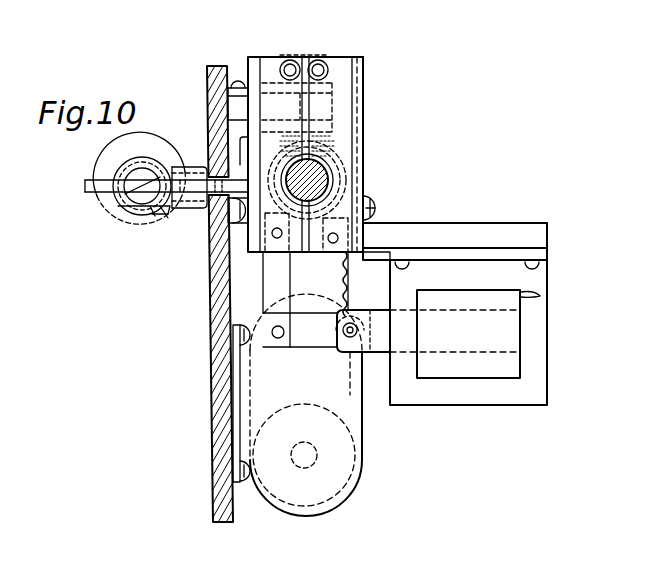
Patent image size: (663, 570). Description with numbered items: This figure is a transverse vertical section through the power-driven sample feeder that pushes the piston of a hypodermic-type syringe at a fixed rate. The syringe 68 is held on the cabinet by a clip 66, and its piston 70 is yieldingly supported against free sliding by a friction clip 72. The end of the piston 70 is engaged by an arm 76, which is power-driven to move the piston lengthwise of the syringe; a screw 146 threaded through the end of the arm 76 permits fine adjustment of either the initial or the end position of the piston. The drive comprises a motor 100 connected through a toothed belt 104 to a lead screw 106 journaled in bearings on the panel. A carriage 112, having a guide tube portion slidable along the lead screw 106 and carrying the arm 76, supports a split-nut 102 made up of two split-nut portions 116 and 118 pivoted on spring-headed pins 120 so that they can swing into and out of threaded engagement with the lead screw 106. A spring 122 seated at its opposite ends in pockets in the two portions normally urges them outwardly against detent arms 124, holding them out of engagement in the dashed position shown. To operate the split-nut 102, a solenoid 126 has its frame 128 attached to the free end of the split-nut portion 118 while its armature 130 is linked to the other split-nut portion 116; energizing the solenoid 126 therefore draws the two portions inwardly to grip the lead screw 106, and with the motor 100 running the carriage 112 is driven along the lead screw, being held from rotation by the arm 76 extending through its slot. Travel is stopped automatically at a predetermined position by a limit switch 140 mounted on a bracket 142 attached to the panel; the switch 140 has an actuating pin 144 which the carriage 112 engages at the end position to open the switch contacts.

The clip 66 is at (200, 208).
The syringe 68 is at (107, 168).
The piston 70 is at (152, 222).
The friction clip 72 is at (85, 187).
The arm 76 is at (222, 170).
The motor 100 is at (362, 426).
The split-nut 102 is at (366, 48).
The toothed belt 104 is at (348, 266).
The lead screw 106 is at (322, 182).
The carriage 112 is at (360, 152).
The split-nut portion 116 is at (262, 68).
The split-nut portion 118 is at (352, 72).
The spring-headed pins 120 is at (316, 59).
The spring 122 is at (338, 131).
The detent arms 124 is at (376, 204).
The solenoid 126 is at (543, 402).
The frame 128 is at (503, 229).
The armature 130 is at (382, 348).
The limit switch 140 is at (236, 105).
The bracket 142 is at (237, 128).
The actuating pin 144 is at (326, 101).
The screw 146 is at (148, 205).